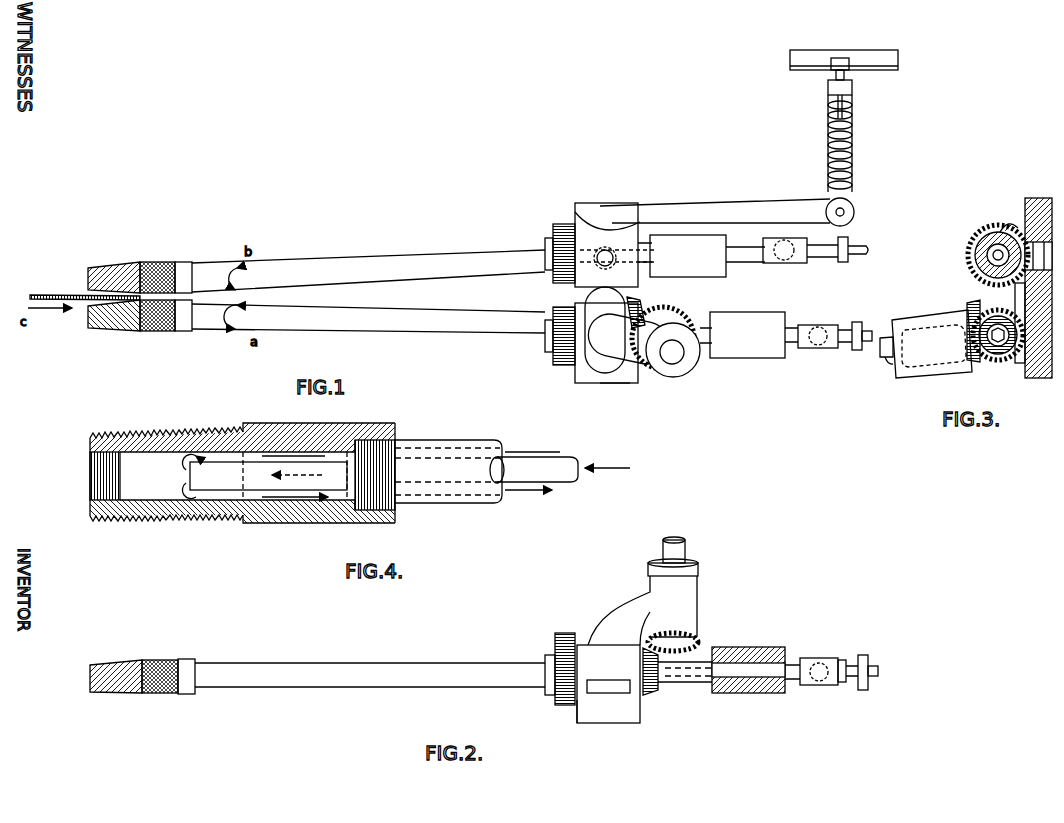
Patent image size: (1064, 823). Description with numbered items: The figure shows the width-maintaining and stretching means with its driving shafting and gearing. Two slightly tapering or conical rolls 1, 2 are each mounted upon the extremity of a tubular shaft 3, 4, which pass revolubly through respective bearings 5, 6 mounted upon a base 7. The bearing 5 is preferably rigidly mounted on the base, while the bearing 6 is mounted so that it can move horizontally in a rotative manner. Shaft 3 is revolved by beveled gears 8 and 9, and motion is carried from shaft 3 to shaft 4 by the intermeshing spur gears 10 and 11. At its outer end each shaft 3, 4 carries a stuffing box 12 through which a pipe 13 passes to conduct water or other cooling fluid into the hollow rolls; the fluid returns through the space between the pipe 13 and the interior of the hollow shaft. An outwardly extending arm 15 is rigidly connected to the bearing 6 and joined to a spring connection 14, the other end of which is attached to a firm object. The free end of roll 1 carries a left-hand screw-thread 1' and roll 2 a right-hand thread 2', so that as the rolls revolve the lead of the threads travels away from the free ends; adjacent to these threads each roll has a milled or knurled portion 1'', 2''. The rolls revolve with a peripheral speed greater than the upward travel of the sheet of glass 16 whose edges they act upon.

In FIG. 1, the roll 1 is at (183, 336).
In FIG. 4, the roll 1 is at (387, 462).
In FIG. 2, the roll 1 is at (194, 656).
In FIG. 1, the left-hand screw-thread 1' is at (114, 334).
In FIG. 4, the left-hand screw-thread 1' is at (242, 463).
In FIG. 2, the left-hand screw-thread 1' is at (116, 657).
In FIG. 1, the milled or knurled portion 1'' is at (155, 334).
In FIG. 4, the milled or knurled portion 1'' is at (319, 461).
In FIG. 2, the milled or knurled portion 1'' is at (158, 656).
In FIG. 1, the roll 2 is at (189, 256).
In FIG. 1, the right-hand screw-thread 2' is at (114, 262).
In FIG. 1, the milled or knurled portion 2'' is at (157, 259).
In FIG. 1, the tubular shaft 3 is at (350, 329).
In FIG. 4, the tubular shaft 3 is at (472, 497).
In FIG. 2, the tubular shaft 3 is at (372, 662).
In FIG. 1, the tubular shaft 4 is at (345, 256).
In FIG. 1, the bearing 5 is at (580, 355).
In FIG. 2, the bearing 5 is at (612, 652).
In FIG. 1, the bearing 6 is at (597, 235).
In FIG. 1, the base 7 is at (600, 385).
In FIG. 3, the base 7 is at (1025, 200).
In FIG. 2, the base 7 is at (575, 708).
In FIG. 1, the beveled gear 8 is at (690, 322).
In FIG. 3, the beveled gear 8 is at (970, 364).
In FIG. 2, the beveled gear 8 is at (682, 548).
In FIG. 1, the beveled gear 9 is at (646, 312).
In FIG. 2, the beveled gear 9 is at (660, 690).
In FIG. 1, the spur gear 10 is at (552, 240).
In FIG. 3, the spur gear 10 is at (978, 232).
In FIG. 1, the spur gear 11 is at (551, 348).
In FIG. 3, the spur gear 11 is at (972, 293).
In FIG. 2, the spur gear 11 is at (560, 640).
In FIG. 1, the stuffing box 12 is at (750, 312).
In FIG. 2, the stuffing box 12 is at (762, 647).
In FIG. 1, the pipe 13 is at (822, 325).
In FIG. 4, the pipe 13 is at (572, 484).
In FIG. 2, the pipe 13 is at (852, 655).
In FIG. 1, the spring connection 14 is at (826, 110).
In FIG. 1, the arm 15 is at (790, 61).
In FIG. 1, the sheet of glass 16 is at (80, 301).